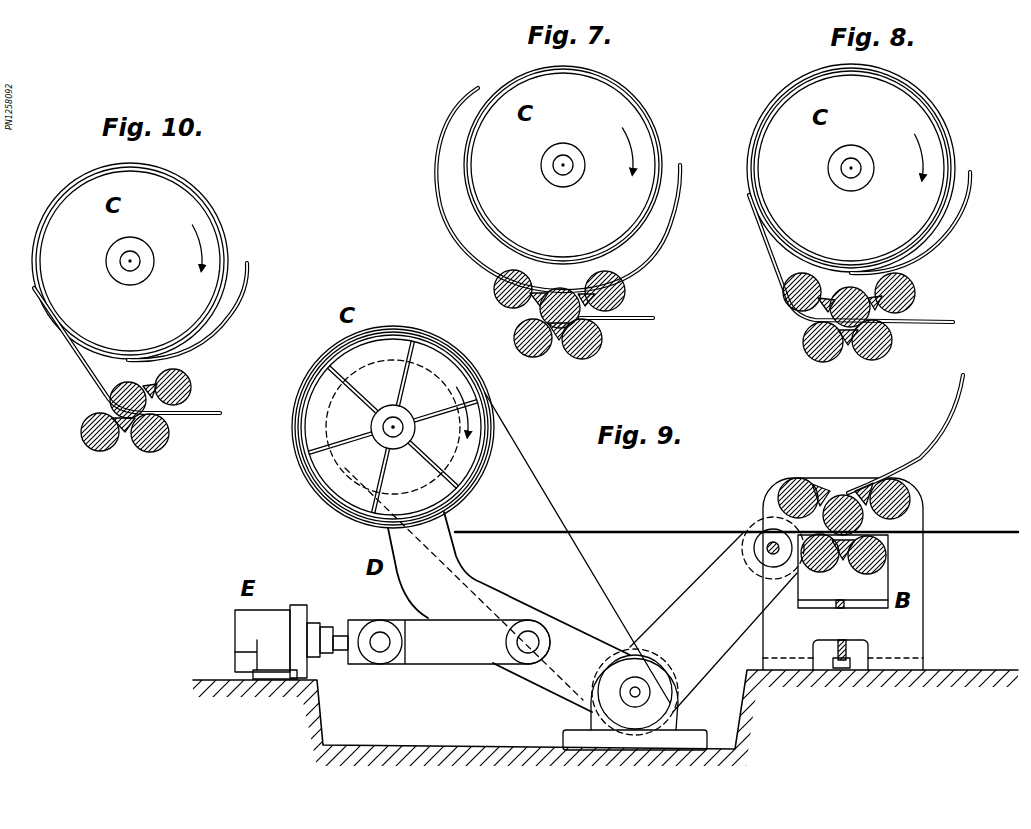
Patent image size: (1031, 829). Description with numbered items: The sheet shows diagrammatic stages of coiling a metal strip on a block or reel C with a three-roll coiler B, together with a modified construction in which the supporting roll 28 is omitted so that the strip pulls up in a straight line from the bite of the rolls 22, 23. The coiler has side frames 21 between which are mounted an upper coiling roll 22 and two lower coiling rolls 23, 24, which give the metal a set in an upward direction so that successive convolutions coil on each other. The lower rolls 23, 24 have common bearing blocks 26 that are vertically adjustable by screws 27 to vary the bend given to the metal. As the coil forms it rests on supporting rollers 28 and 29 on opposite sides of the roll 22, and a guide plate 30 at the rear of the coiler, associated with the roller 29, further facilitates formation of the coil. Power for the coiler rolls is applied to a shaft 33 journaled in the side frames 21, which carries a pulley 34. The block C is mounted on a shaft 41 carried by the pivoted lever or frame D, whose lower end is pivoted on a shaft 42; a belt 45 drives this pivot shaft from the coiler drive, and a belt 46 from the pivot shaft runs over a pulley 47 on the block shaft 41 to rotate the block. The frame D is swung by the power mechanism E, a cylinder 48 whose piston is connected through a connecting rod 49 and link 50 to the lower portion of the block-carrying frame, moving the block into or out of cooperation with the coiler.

In FIG. 9, the side frames 21 is at (843, 574).
In FIG. 10, the upper coiling roll 22 is at (110, 398).
In FIG. 7, the upper coiling roll 22 is at (540, 313).
In FIG. 8, the upper coiling roll 22 is at (832, 313).
In FIG. 9, the upper coiling roll 22 is at (845, 505).
In FIG. 10, the lower coiling roll 23 is at (90, 448).
In FIG. 7, the lower coiling roll 23 is at (532, 356).
In FIG. 8, the lower coiling roll 23 is at (812, 353).
In FIG. 9, the lower coiling roll 23 is at (816, 570).
In FIG. 10, the lower coiling roll 24 is at (165, 448).
In FIG. 7, the lower coiling roll 24 is at (601, 349).
In FIG. 8, the lower coiling roll 24 is at (893, 345).
In FIG. 9, the lower coiling roll 24 is at (867, 572).
In FIG. 9, the bearing blocks 26 is at (843, 593).
In FIG. 9, the adjusting screws 27 is at (833, 651).
In FIG. 7, the supporting roller 28 is at (503, 277).
In FIG. 8, the supporting roller 28 is at (795, 291).
In FIG. 9, the supporting roller 28 is at (800, 488).
In FIG. 10, the supporting roller 29 is at (192, 387).
In FIG. 7, the supporting roller 29 is at (626, 284).
In FIG. 8, the supporting roller 29 is at (916, 290).
In FIG. 9, the supporting roller 29 is at (888, 488).
In FIG. 10, the guide plate 30 is at (238, 318).
In FIG. 7, the guide plate 30 is at (672, 217).
In FIG. 8, the guide plate 30 is at (962, 217).
In FIG. 9, the guide plate 30 is at (958, 418).
In FIG. 9, the drive shaft 33 is at (770, 556).
In FIG. 9, the pulley 34 is at (745, 553).
In FIG. 9, the block shaft 41 is at (382, 440).
In FIG. 9, the pivot shaft 42 is at (627, 698).
In FIG. 9, the belt 45 is at (673, 600).
In FIG. 9, the belt 46 is at (538, 499).
In FIG. 9, the pulley 47 is at (340, 430).
In FIG. 9, the cylinder 48 is at (266, 625).
In FIG. 9, the connecting rod 49 is at (341, 652).
In FIG. 9, the link 50 is at (440, 655).